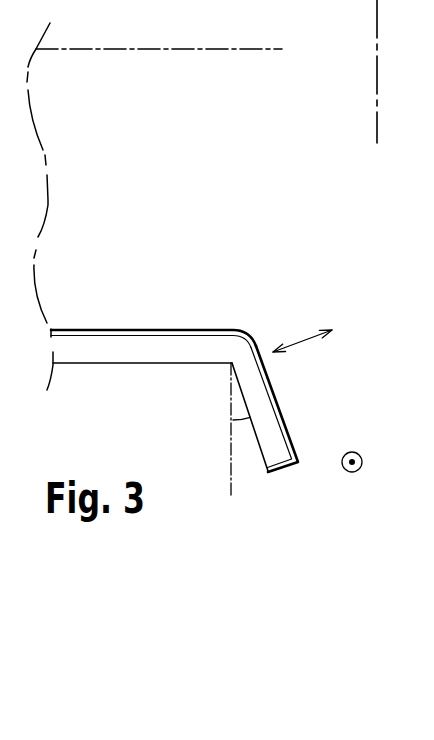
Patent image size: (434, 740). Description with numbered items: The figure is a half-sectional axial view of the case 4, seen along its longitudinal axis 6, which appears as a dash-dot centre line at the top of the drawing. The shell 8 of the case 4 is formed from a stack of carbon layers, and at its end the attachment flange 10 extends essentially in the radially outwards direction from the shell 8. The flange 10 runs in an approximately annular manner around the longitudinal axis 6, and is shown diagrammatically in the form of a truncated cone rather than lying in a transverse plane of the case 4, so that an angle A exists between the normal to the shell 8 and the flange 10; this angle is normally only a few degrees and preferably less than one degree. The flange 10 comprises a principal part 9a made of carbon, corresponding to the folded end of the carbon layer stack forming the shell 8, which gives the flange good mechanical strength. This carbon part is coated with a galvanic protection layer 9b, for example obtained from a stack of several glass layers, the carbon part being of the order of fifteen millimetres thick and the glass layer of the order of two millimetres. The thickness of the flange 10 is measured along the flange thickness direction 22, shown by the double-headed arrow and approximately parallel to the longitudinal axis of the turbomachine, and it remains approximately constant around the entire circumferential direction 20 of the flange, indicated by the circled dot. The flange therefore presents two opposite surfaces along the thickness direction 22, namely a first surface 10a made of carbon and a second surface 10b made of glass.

The case 4 is at (92, 400).
The longitudinal axis 6 is at (195, 49).
The shell 8 is at (223, 426).
The principal part 9a is at (266, 450).
The galvanic protection layer 9b is at (276, 395).
The attachment flange 10 is at (282, 416).
The first surface 10a is at (256, 445).
The second surface 10b is at (286, 425).
The circumferential direction 20 is at (356, 453).
The flange thickness direction 22 is at (300, 335).
The angle A is at (235, 420).